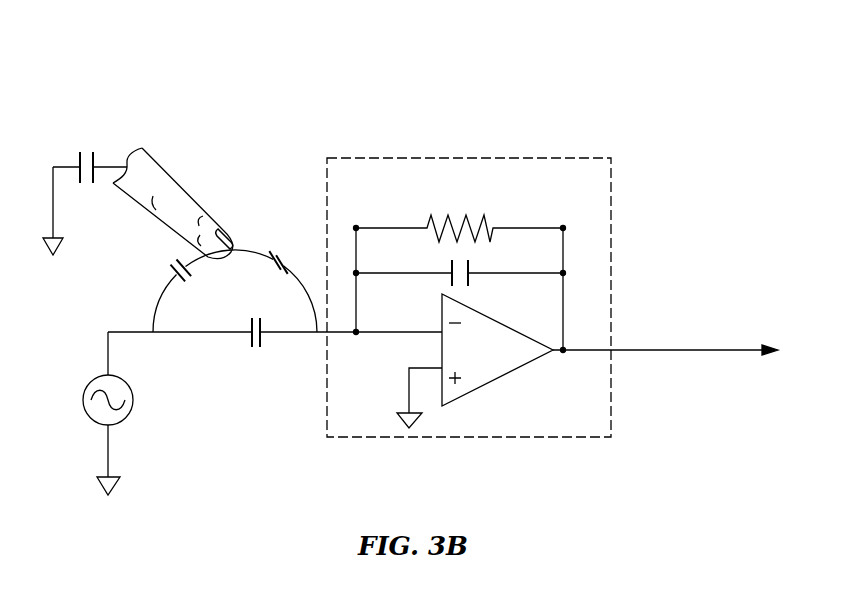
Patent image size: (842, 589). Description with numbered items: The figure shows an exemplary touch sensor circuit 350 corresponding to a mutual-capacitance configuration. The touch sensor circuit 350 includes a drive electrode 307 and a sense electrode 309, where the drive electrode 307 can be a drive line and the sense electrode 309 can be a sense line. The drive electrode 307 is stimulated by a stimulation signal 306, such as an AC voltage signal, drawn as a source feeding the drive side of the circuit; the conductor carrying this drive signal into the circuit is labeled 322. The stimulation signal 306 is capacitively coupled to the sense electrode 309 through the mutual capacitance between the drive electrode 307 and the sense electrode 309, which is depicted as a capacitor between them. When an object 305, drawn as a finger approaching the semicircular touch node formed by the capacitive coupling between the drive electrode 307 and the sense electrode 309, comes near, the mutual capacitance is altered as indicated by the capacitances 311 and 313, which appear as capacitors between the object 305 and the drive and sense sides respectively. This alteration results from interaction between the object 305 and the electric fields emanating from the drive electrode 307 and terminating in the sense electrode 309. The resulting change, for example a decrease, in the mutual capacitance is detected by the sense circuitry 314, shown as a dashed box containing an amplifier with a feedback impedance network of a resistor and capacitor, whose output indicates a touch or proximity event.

The touch sensor circuit 350 is at (180, 84).
The sense electrode 309 is at (82, 148).
The object 305 is at (169, 186).
The capacitance 313 is at (279, 243).
The capacitance 311 is at (167, 270).
The drive line 322 is at (127, 328).
The drive electrode 307 is at (248, 325).
The stimulation signal 306 is at (133, 402).
The sense circuitry 314 is at (373, 158).